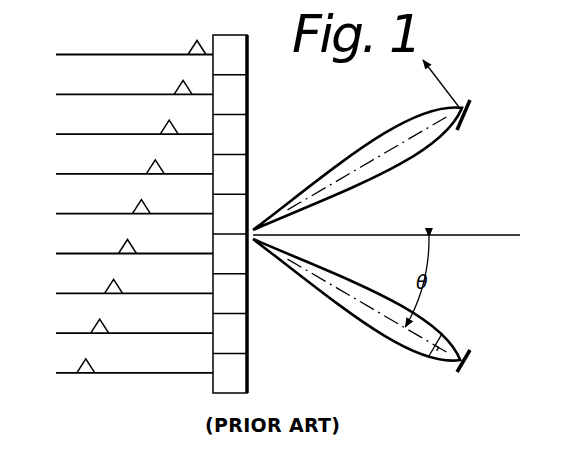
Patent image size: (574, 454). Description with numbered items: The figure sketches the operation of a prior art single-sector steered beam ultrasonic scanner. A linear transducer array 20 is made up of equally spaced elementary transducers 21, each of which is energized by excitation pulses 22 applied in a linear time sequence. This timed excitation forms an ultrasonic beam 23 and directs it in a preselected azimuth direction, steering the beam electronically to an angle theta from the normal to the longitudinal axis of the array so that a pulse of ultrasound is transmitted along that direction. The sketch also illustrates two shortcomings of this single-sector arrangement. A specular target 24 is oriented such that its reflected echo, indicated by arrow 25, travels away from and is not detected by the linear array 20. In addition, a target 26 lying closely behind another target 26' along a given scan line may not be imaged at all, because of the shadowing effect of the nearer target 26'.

The linear transducer array 20 is at (252, 50).
The elementary transducers 21 is at (240, 342).
The excitation pulses 22 is at (150, 162).
The ultrasonic beam 23 is at (437, 362).
The specular target 24 is at (465, 122).
The reflected echo arrow 25 is at (446, 84).
The target 26 is at (479, 378).
The shadowing target 26' is at (454, 335).